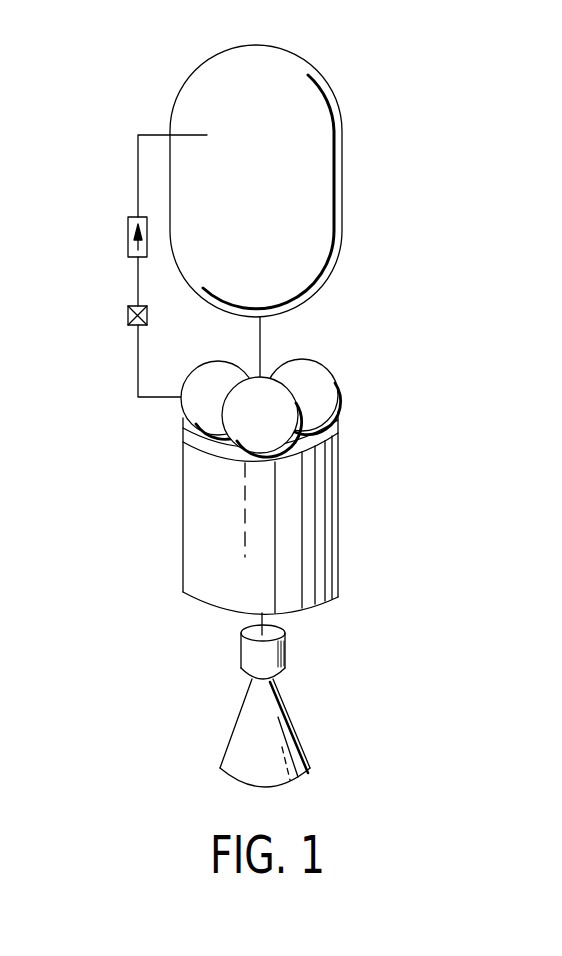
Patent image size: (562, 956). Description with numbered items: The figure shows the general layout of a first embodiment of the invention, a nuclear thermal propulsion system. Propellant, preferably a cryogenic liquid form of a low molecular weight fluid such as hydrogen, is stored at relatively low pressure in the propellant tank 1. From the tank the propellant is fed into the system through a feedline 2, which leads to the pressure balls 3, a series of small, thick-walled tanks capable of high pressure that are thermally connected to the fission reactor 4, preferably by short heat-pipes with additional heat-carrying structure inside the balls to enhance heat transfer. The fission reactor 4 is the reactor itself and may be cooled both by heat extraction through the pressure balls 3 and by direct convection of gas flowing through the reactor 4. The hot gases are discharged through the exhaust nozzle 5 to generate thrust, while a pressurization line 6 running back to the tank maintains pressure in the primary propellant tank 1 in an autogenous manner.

The propellant tank 1 is at (323, 173).
The feedline 2 is at (260, 335).
The pressure balls 3 is at (313, 380).
The fission reactor 4 is at (197, 510).
The exhaust nozzle 5 is at (248, 728).
The pressurization line 6 is at (138, 289).